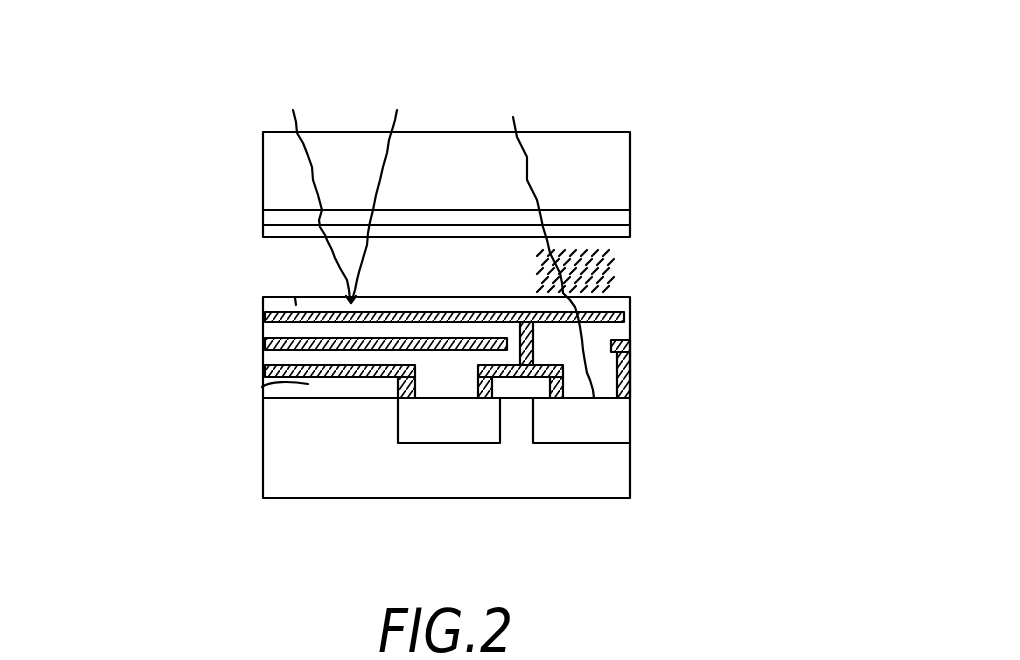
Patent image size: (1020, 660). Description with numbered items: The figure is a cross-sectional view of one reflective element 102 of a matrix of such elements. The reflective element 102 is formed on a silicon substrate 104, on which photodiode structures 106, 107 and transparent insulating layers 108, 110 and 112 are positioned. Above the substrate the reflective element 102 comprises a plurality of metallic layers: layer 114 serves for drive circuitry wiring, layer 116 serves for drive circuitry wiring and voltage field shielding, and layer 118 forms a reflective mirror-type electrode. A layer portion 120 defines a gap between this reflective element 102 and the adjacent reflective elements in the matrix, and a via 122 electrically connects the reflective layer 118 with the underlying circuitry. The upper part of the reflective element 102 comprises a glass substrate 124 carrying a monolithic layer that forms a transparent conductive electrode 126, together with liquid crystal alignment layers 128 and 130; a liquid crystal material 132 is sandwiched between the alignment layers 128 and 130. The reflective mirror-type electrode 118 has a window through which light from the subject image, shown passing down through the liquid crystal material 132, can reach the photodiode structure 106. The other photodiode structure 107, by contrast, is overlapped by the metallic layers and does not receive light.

The reflective element 102 is at (476, 66).
The silicon substrate 104 is at (618, 463).
The photodiode structure 106 is at (615, 420).
The photodiode structure 107 is at (422, 432).
The transparent insulating layer 108 is at (262, 387).
The transparent insulating layer 110 is at (263, 358).
The transparent insulating layer 112 is at (263, 327).
The metallic layer 114 is at (263, 375).
The metallic layer 116 is at (263, 343).
The reflective mirror-type electrode 118 is at (263, 312).
The layer portion 120 is at (622, 317).
The via 122 is at (517, 330).
The glass substrate 124 is at (598, 168).
The transparent conductive electrode 126 is at (263, 222).
The liquid crystal alignment layer 128 is at (263, 230).
The liquid crystal alignment layer 130 is at (264, 296).
The liquid crystal material 132 is at (420, 280).